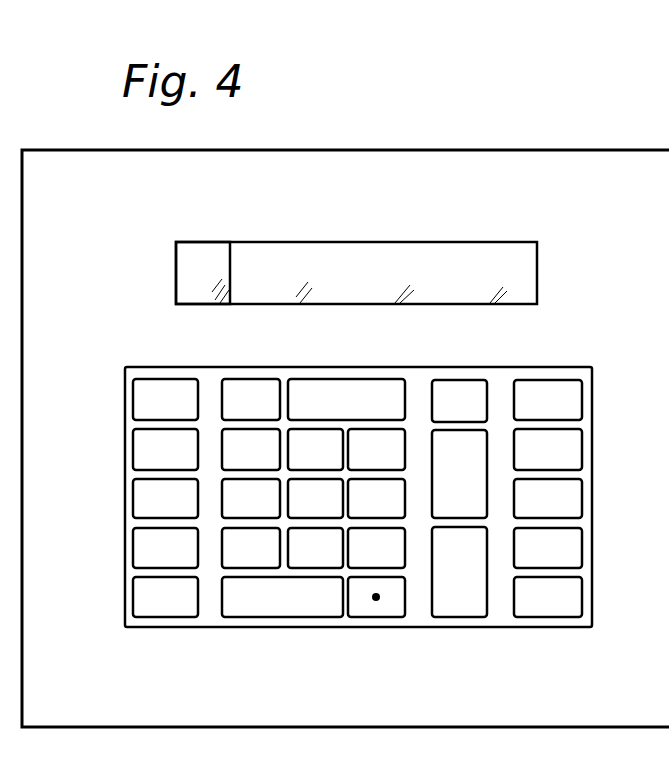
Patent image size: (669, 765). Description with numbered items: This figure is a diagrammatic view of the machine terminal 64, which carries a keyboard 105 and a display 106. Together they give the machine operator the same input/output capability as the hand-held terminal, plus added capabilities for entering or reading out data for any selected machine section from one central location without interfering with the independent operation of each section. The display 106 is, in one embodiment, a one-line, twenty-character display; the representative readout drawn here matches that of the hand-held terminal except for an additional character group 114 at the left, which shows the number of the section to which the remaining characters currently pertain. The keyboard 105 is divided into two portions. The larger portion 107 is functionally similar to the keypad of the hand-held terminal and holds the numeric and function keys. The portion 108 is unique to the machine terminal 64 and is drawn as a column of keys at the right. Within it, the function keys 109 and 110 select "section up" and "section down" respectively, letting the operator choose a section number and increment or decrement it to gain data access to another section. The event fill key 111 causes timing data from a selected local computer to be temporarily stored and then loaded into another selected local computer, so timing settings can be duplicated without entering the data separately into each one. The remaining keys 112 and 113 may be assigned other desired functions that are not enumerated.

The machine terminal 64 is at (351, 151).
The display 106 is at (301, 245).
The character group 114 is at (174, 283).
The keyboard 105 is at (124, 418).
The portion 107 is at (494, 366).
The portion 108 is at (600, 368).
The function key 109 is at (572, 407).
The function key 110 is at (575, 603).
The event fill key 111 is at (566, 452).
The key 112 is at (566, 500).
The key 113 is at (568, 550).